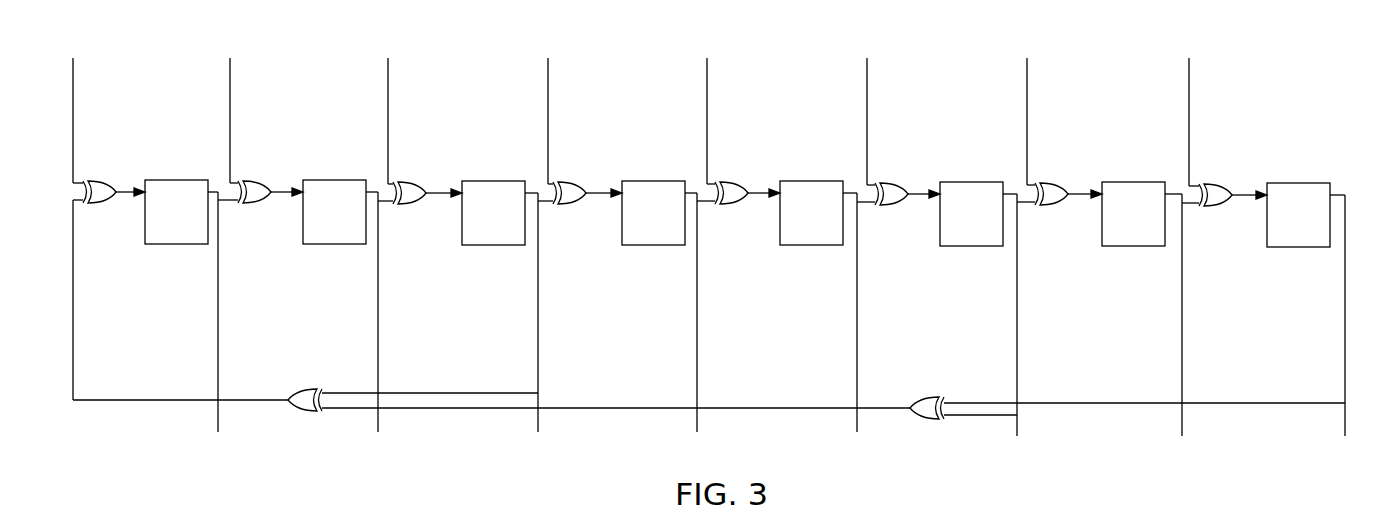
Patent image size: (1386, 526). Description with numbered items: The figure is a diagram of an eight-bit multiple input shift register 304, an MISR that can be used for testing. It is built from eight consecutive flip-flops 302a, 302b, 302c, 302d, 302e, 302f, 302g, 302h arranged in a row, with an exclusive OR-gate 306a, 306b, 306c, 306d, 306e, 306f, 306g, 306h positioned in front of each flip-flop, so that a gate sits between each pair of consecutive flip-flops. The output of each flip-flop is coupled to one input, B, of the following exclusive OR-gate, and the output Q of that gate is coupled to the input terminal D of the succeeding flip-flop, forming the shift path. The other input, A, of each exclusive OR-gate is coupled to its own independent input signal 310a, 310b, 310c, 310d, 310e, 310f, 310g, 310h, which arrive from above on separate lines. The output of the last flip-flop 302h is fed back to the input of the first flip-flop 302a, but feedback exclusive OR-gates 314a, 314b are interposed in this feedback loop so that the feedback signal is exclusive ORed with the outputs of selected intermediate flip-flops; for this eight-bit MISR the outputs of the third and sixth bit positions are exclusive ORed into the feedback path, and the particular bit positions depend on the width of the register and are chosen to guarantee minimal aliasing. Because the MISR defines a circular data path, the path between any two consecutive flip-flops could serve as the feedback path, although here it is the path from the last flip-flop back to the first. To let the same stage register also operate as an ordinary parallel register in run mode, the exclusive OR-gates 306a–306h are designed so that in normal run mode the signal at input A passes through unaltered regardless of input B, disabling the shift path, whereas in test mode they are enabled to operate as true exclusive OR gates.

The flip-flop 302a is at (160, 244).
The flip-flop 302b is at (318, 244).
The flip-flop 302c is at (477, 245).
The flip-flop 302d is at (637, 245).
The flip-flop 302e is at (795, 245).
The flip-flop 302f is at (955, 246).
The flip-flop 302g is at (1117, 246).
The flip-flop 302h is at (1282, 247).
The exclusive OR-gate 306a is at (91, 180).
The exclusive OR-gate 306b is at (246, 180).
The exclusive OR-gate 306c is at (401, 181).
The exclusive OR-gate 306d is at (561, 181).
The exclusive OR-gate 306e is at (723, 181).
The exclusive OR-gate 306f is at (883, 182).
The exclusive OR-gate 306g is at (1043, 182).
The exclusive OR-gate 306h is at (1207, 183).
The independent input signal 310a is at (73, 86).
The independent input signal 310b is at (230, 86).
The independent input signal 310c is at (388, 86).
The independent input signal 310d is at (548, 86).
The independent input signal 310e is at (707, 86).
The independent input signal 310f is at (867, 86).
The independent input signal 310g is at (1027, 86).
The independent input signal 310h is at (1189, 86).
The feedback exclusive OR-gate 314a is at (954, 393).
The feedback exclusive OR-gate 314b is at (314, 388).
The multiple input shift register 304 is at (172, 448).